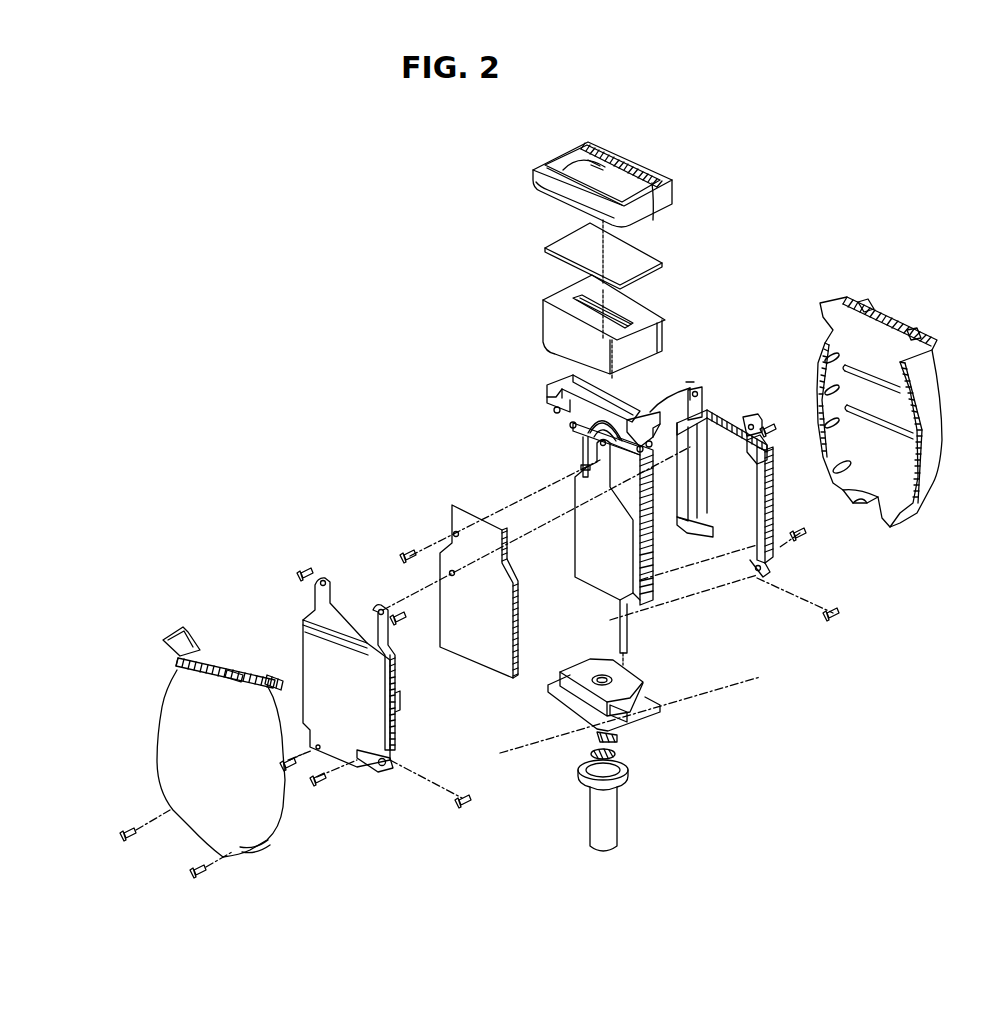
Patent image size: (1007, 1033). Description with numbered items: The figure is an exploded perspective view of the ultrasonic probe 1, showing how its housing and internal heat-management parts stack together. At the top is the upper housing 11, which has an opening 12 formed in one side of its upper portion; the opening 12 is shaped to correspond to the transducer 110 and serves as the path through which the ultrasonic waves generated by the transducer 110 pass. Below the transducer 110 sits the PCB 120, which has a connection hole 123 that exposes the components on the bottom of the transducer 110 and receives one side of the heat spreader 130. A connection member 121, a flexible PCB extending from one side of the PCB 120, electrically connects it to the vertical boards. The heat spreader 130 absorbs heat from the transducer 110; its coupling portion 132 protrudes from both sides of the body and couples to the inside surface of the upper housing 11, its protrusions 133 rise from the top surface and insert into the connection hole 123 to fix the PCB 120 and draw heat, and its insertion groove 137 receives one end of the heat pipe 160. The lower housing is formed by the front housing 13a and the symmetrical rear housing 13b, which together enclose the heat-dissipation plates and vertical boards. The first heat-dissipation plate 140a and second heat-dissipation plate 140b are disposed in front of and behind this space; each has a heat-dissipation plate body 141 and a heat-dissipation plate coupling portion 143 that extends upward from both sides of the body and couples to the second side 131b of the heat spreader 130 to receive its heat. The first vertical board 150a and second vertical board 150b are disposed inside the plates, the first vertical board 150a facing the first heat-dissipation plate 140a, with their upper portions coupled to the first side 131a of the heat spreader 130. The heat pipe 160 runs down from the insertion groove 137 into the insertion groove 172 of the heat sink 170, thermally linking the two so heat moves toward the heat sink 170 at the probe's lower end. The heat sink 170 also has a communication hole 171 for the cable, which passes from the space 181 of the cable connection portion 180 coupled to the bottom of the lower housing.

The ultrasonic probe 1 is at (804, 201).
The upper housing 11 is at (674, 203).
The opening 12 is at (598, 153).
The front housing 13a is at (160, 745).
The rear housing 13b is at (930, 470).
The transducer 110 is at (676, 254).
The PCB 120 is at (622, 324).
The connection member 121 is at (546, 340).
The connection hole 123 is at (572, 299).
The heat spreader 130 is at (602, 401).
The first side 131a is at (554, 410).
The second side 131b is at (570, 425).
The coupling portion 132 is at (684, 380).
The protrusions 133 is at (655, 372).
The insertion groove 137 is at (585, 445).
The first heat-dissipation plate 140a is at (314, 669).
The second heat-dissipation plate 140b is at (790, 557).
The heat-dissipation plate body 141 is at (310, 655).
The heat-dissipation plate coupling portion 143 is at (393, 624).
The first vertical board 150a is at (521, 600).
The second vertical board 150b is at (578, 552).
The heat pipe 160 is at (630, 620).
The heat sink 170 is at (626, 692).
The communication hole 171 is at (596, 676).
The insertion groove 172 is at (652, 712).
The cable connection portion 180 is at (620, 822).
The space 181 is at (617, 754).